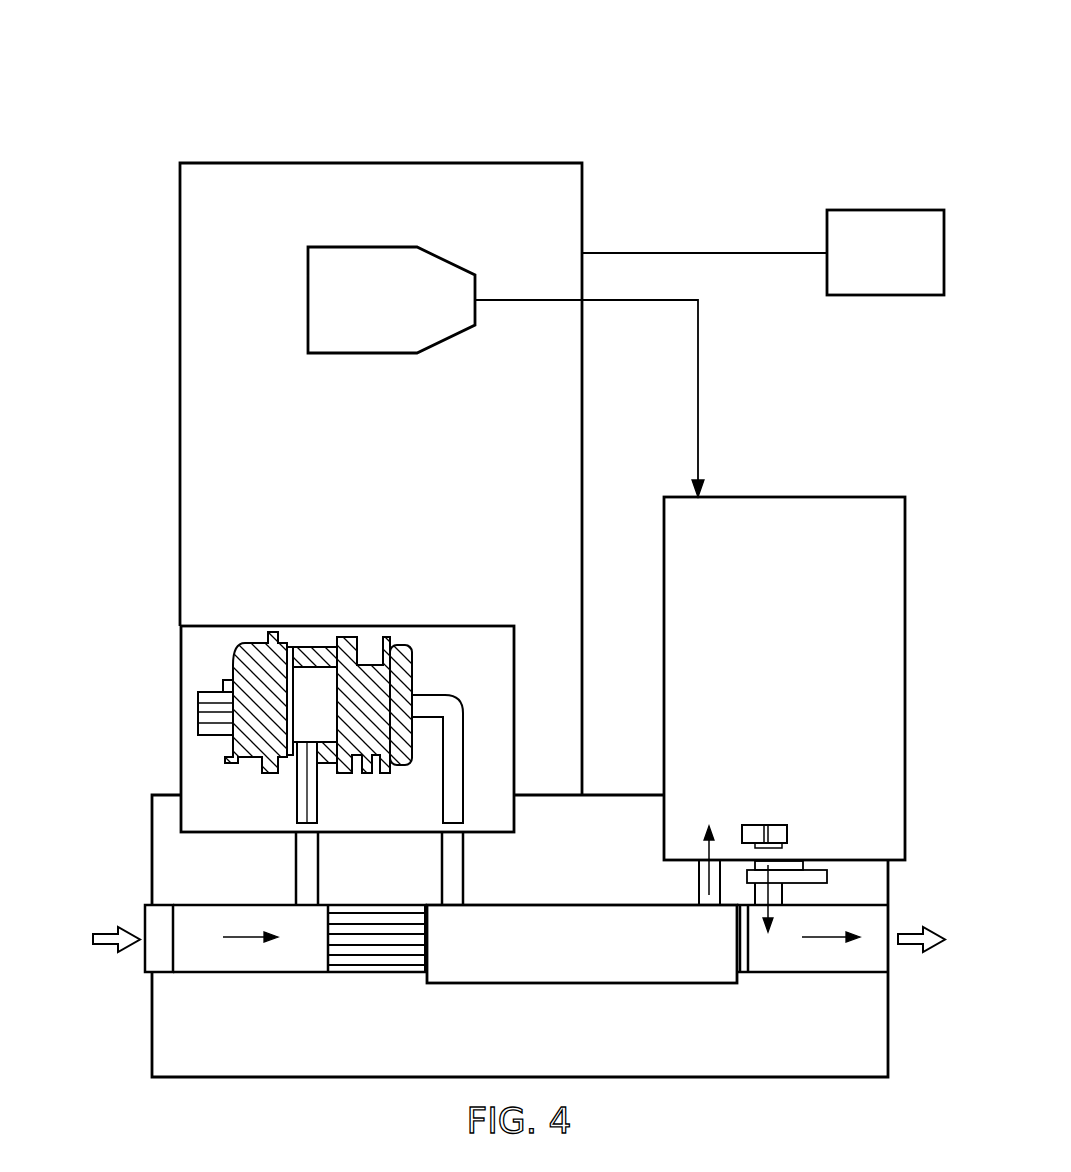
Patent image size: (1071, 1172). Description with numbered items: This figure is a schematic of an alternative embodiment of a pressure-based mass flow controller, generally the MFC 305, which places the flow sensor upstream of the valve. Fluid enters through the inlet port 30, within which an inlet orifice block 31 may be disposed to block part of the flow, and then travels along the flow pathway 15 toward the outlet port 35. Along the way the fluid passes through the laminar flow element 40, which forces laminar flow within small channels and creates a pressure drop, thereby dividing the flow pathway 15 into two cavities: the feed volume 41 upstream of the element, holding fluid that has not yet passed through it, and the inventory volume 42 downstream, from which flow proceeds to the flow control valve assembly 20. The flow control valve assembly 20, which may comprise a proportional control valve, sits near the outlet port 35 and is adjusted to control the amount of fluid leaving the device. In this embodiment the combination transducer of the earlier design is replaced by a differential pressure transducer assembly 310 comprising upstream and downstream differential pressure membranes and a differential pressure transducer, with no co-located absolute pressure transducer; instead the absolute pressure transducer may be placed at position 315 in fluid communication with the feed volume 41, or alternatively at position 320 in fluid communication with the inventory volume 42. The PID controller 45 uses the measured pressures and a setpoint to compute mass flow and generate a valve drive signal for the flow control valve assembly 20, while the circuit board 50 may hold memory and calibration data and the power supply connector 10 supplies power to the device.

The mass flow controller 305 is at (698, 86).
The circuit board 50 is at (378, 163).
The PID controller 45 is at (308, 283).
The power supply connector 10 is at (885, 210).
The flow control valve assembly 20 is at (827, 497).
The differential pressure transducer assembly 310 is at (418, 672).
The position upstream of the laminar flow element 315 is at (225, 905).
The position downstream of the laminar flow element 320 is at (580, 905).
The inlet orifice block 31 is at (150, 918).
The inlet port 30 is at (146, 958).
The flow pathway 15 is at (247, 940).
The feed volume 41 is at (300, 962).
The laminar flow element 40 is at (375, 973).
The inventory volume 42 is at (566, 971).
The outlet port 35 is at (888, 960).